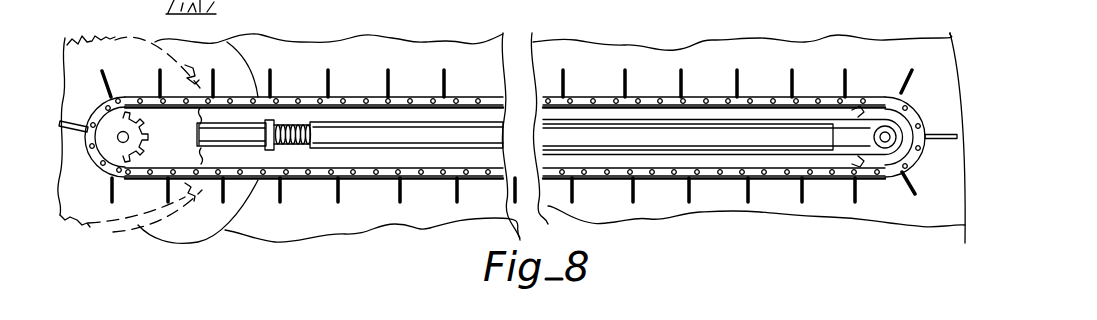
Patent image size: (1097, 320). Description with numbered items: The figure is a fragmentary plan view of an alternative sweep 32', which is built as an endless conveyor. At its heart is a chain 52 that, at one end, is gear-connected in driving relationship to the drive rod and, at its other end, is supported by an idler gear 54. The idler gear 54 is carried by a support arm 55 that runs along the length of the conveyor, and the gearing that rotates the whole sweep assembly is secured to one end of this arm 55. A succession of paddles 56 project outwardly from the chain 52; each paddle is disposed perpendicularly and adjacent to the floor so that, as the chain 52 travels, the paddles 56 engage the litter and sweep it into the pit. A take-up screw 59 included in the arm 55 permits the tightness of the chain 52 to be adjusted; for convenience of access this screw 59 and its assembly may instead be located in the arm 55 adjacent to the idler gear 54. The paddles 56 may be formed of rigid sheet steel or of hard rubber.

The chain 52 is at (402, 98).
The paddles 56 is at (388, 68).
The take-up screw 59 is at (288, 128).
The support arm 55 is at (388, 135).
The idler gear 54 is at (893, 160).
The sweep 32' is at (265, 167).